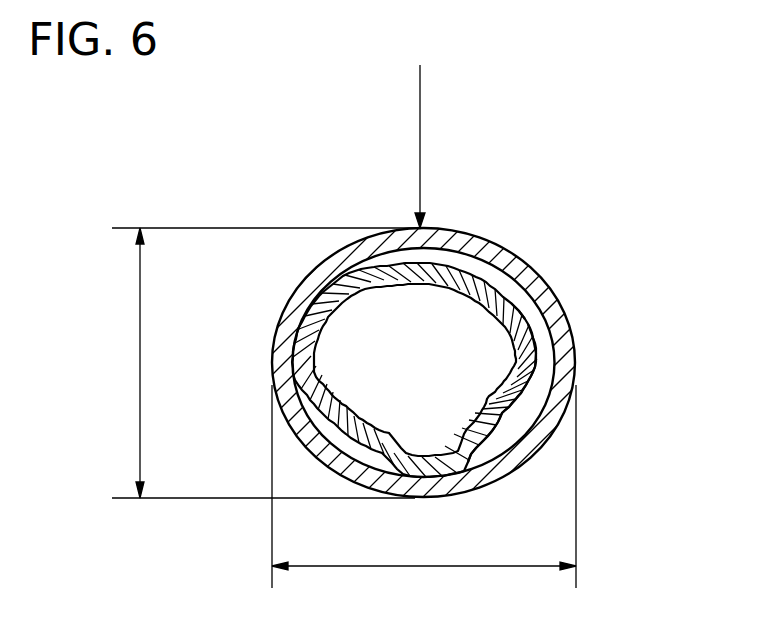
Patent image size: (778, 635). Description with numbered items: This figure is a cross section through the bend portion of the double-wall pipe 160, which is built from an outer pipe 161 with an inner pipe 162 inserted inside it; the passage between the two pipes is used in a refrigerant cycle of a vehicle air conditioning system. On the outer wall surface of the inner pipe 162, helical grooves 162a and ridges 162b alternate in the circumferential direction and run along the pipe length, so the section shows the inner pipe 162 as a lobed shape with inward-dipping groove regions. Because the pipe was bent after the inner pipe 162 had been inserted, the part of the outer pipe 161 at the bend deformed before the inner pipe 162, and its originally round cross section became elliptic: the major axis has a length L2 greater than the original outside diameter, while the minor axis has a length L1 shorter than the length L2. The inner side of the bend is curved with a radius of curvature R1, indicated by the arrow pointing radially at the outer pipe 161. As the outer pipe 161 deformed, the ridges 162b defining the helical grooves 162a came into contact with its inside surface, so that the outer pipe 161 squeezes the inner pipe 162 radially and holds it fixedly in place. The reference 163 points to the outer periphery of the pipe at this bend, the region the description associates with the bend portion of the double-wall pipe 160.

The double-wall pipe 160 is at (389, 317).
The outer pipe 161 is at (512, 266).
The inner pipe 162 is at (440, 272).
The helical grooves 162a is at (517, 418).
The ridges 162b is at (550, 318).
The outer peripheral surface of tube 163 is at (562, 287).
The radius of curvature R1 is at (438, 146).
The minor axis length L1 is at (261, 363).
The major axis length L2 is at (424, 495).